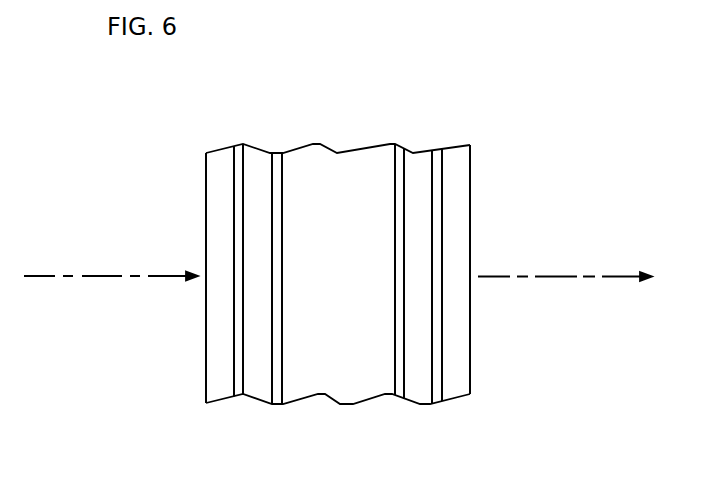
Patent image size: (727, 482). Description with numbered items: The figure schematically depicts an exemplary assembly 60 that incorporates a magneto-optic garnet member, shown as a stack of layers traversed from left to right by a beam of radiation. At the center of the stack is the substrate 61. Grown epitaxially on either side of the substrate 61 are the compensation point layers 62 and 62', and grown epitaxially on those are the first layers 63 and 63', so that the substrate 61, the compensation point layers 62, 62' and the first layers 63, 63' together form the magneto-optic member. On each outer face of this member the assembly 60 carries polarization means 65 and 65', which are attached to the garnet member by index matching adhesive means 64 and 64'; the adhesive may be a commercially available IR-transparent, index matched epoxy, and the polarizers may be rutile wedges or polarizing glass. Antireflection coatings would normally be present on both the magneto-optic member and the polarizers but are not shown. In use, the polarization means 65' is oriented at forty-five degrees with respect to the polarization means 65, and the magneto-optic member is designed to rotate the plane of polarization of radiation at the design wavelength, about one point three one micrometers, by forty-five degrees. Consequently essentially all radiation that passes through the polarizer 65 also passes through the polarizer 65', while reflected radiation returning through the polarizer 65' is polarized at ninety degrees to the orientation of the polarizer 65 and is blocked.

The assembly 60 is at (388, 102).
The substrate 61 is at (337, 153).
The compensation point layer 62 is at (269, 298).
The compensation point layer 62' is at (411, 293).
The first layer 63 is at (264, 259).
The first layer 63' is at (422, 261).
The index matching adhesive means 64 is at (232, 288).
The index matching adhesive means 64' is at (451, 297).
The polarization means 65 is at (224, 258).
The polarization means 65' is at (461, 260).